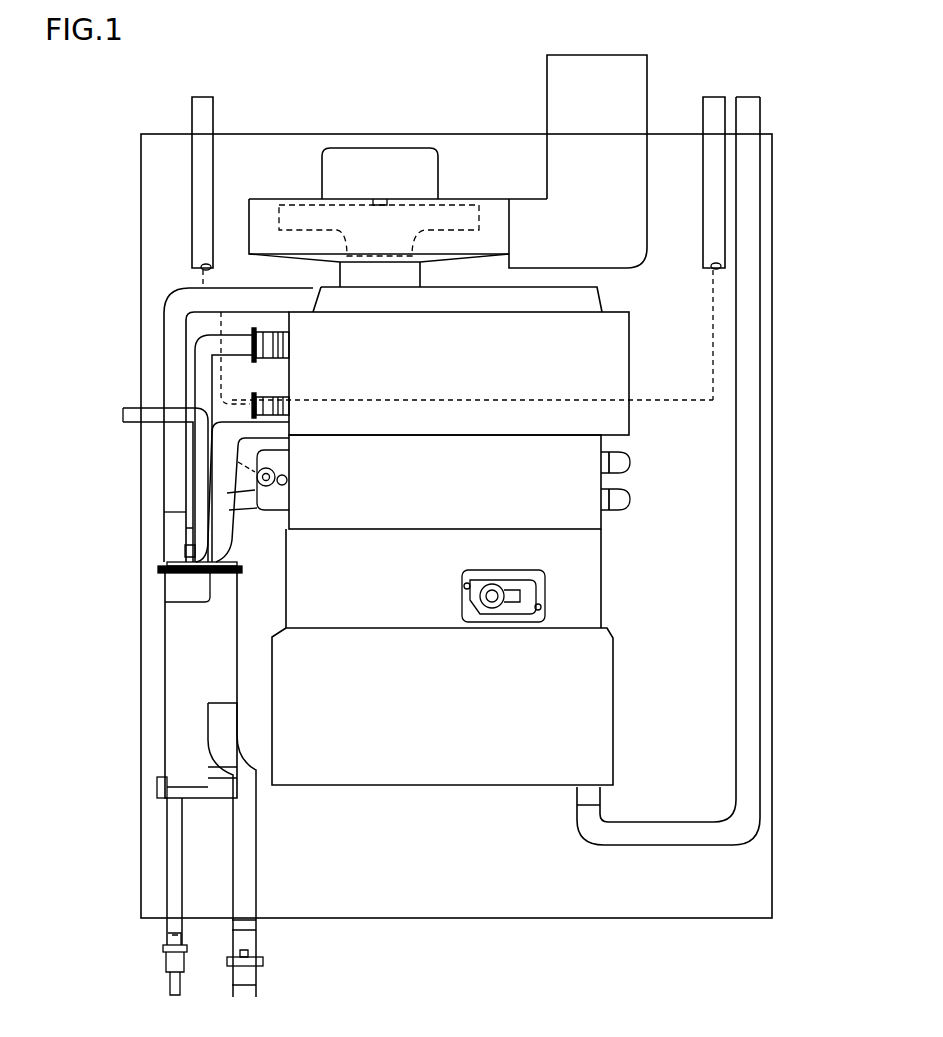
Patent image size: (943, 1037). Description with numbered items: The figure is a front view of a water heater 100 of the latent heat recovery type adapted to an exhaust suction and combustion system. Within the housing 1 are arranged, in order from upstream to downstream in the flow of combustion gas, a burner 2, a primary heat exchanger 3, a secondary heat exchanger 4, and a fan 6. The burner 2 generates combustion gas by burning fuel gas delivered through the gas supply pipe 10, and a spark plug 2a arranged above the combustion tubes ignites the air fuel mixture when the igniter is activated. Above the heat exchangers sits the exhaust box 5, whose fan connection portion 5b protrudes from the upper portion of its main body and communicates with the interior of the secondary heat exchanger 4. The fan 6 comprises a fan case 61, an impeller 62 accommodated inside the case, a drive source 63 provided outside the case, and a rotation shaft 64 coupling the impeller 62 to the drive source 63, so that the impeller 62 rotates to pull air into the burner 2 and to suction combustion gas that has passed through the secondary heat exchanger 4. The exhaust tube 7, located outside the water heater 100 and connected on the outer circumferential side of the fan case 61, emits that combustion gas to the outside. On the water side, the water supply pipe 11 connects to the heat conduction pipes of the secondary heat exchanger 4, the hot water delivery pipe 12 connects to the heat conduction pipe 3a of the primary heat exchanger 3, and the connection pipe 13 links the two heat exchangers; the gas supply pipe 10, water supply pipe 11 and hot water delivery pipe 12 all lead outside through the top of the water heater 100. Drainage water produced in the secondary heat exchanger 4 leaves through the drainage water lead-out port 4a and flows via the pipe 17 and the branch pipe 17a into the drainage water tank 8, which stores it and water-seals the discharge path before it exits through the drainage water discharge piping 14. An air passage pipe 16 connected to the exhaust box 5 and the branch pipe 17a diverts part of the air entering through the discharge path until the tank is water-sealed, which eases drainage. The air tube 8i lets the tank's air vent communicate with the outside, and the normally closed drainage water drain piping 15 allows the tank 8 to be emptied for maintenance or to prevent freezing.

The water heater 100 is at (787, 111).
The housing 1 is at (772, 192).
The burner 2 is at (540, 748).
The spark plug 2a is at (490, 600).
The primary heat exchanger 3 is at (587, 520).
The heat conduction pipe 3a is at (633, 460).
The secondary heat exchanger 4 is at (612, 420).
The drainage water lead-out port 4a is at (215, 432).
The exhaust box 5 is at (585, 297).
The fan connection portion 5b is at (410, 276).
The fan 6 is at (397, 157).
The fan case 61 is at (264, 199).
The impeller 62 is at (302, 215).
The drive source 63 is at (400, 167).
The rotation shaft 64 is at (378, 199).
The exhaust tube 7 is at (647, 102).
The drainage water tank 8 is at (178, 657).
The air tube 8i is at (153, 484).
The gas supply pipe 10 is at (746, 97).
The water supply pipe 11 is at (711, 97).
The hot water delivery pipe 12 is at (201, 97).
The connection pipe 13 is at (205, 345).
The drainage water discharge piping 14 is at (245, 845).
The drainage water drain piping 15 is at (173, 848).
The air passage pipe 16 is at (177, 390).
The pipe 17 is at (220, 484).
The branch pipe 17a is at (172, 533).